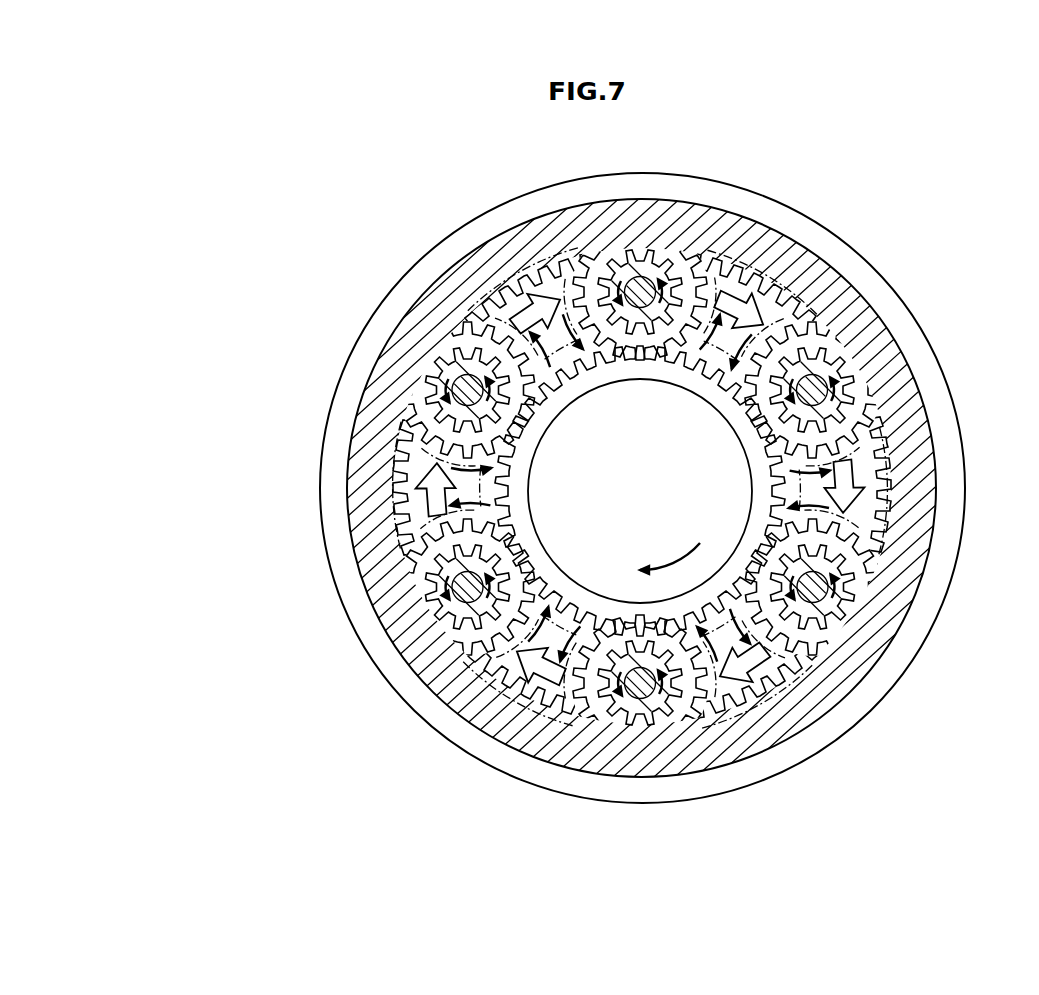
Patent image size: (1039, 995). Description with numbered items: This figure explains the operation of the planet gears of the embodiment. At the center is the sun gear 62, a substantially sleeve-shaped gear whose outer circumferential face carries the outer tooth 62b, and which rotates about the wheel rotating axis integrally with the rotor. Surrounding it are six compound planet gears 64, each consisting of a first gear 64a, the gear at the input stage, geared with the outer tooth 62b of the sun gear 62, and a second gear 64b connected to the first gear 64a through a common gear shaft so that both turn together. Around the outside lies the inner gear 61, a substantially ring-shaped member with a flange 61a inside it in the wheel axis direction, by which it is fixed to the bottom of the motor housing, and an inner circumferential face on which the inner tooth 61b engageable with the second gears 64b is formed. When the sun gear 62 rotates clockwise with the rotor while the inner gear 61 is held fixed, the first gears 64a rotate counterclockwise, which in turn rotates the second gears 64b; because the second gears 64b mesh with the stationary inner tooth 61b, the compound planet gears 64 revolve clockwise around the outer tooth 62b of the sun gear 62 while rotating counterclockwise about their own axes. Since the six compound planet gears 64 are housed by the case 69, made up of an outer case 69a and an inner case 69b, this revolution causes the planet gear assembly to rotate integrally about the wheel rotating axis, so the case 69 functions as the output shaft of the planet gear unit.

The inner gear 61 is at (519, 490).
The flange 61a is at (667, 173).
The inner tooth 61b is at (800, 301).
The sun gear 62 is at (640, 491).
The outer tooth 62b is at (567, 603).
The compound planet gear 64 is at (528, 493).
The first gear 64a is at (546, 282).
The second gear 64b is at (603, 253).
The case 69 is at (640, 528).
The outer case 69a is at (545, 718).
The inner case 69b is at (485, 722).